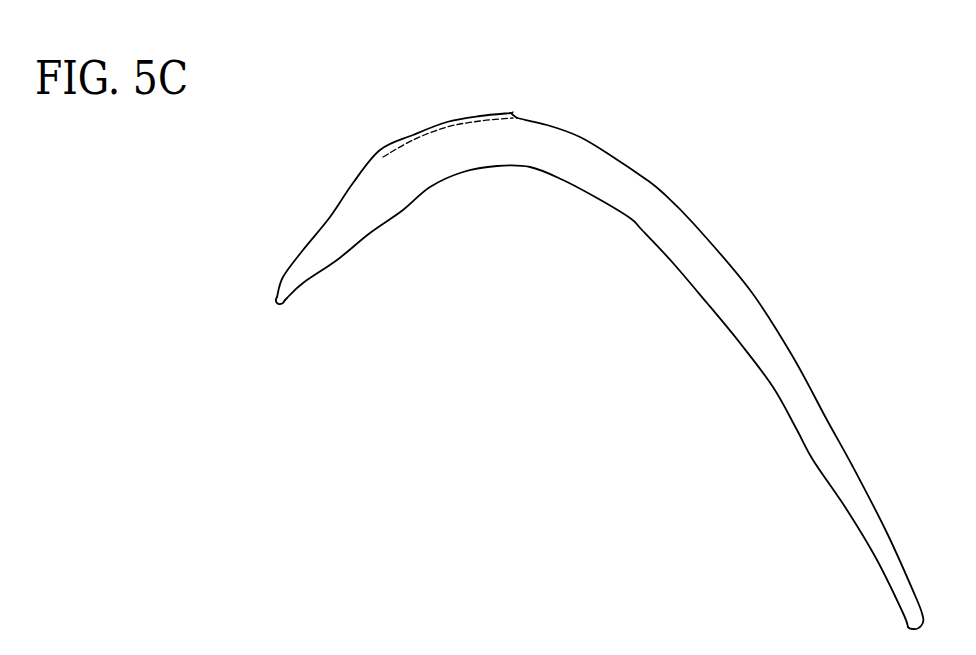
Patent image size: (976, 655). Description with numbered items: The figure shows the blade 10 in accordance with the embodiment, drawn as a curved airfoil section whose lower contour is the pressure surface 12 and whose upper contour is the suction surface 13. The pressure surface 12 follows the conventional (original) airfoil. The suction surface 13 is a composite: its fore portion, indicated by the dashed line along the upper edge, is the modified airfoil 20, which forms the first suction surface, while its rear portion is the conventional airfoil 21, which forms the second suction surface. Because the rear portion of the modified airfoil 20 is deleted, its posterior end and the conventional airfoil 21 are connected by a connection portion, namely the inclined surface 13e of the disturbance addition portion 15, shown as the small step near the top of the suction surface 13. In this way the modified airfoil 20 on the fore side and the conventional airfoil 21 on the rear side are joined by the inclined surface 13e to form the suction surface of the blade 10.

The blade 10 is at (599, 314).
The pressure surface 12 is at (543, 170).
The suction surface 13 is at (377, 153).
The inclined surface 13e is at (515, 113).
The disturbance addition portion 15 is at (513, 109).
The modified airfoil 20 is at (418, 136).
The conventional airfoil 21 is at (667, 193).